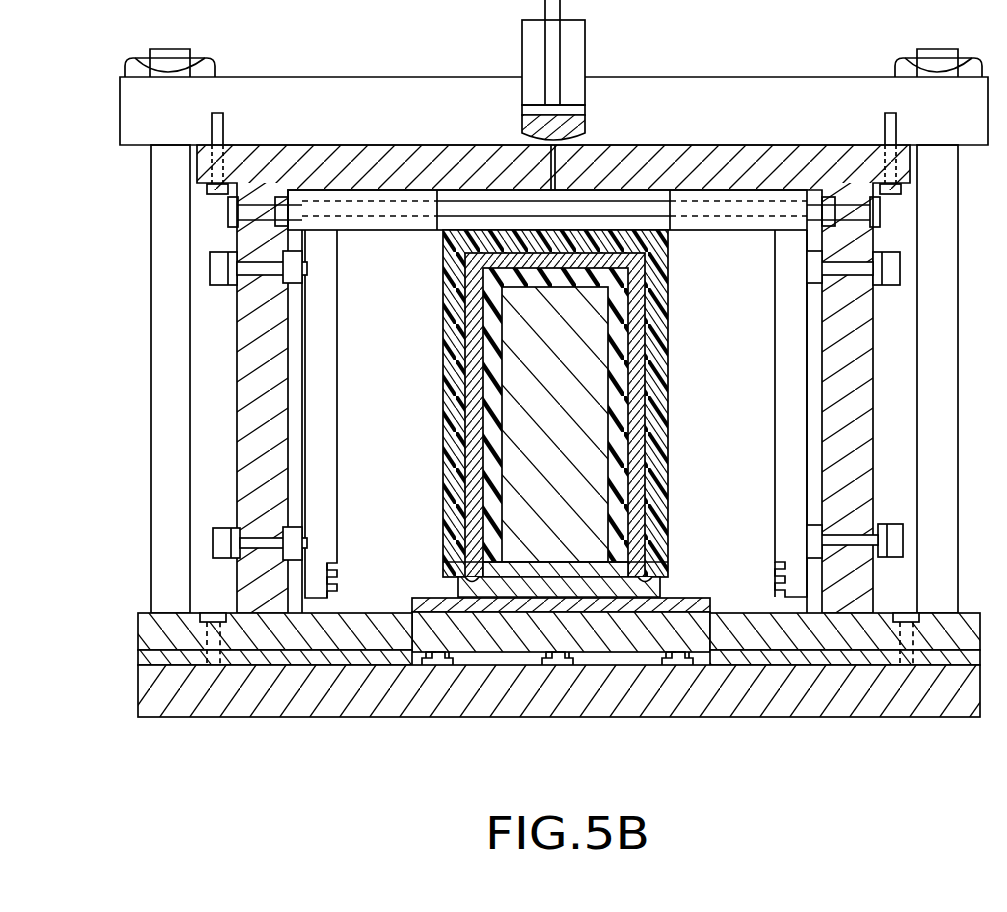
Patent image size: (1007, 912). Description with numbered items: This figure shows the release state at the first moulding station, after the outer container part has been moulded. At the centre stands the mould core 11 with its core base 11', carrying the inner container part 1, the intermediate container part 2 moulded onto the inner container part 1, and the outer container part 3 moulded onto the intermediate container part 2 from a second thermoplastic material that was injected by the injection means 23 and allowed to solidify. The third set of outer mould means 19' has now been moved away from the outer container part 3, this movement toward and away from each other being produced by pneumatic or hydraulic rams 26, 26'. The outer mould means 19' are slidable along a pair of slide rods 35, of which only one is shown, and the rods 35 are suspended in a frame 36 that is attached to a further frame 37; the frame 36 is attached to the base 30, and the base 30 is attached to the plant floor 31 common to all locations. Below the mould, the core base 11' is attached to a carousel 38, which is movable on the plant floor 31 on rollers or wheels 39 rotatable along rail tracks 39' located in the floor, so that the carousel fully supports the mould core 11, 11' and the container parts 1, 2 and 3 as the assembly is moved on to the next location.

The inner container part 1 is at (668, 290).
The intermediate container part 2 is at (668, 343).
The outer container part 3 is at (590, 403).
The mould core 11 is at (611, 424).
The core base 11' is at (593, 547).
The outer mould means 19' is at (359, 414).
The injection means 23 is at (598, 104).
The ram 26 is at (256, 405).
The ram 26' is at (863, 404).
The base 30 is at (158, 637).
The plant floor 31 is at (262, 697).
The slide rods 35 is at (638, 190).
The frame 36 is at (760, 162).
The further frame 37 is at (300, 92).
The carousel 38 is at (685, 625).
The rollers or wheels 39 is at (567, 709).
The rail tracks 39' is at (534, 709).